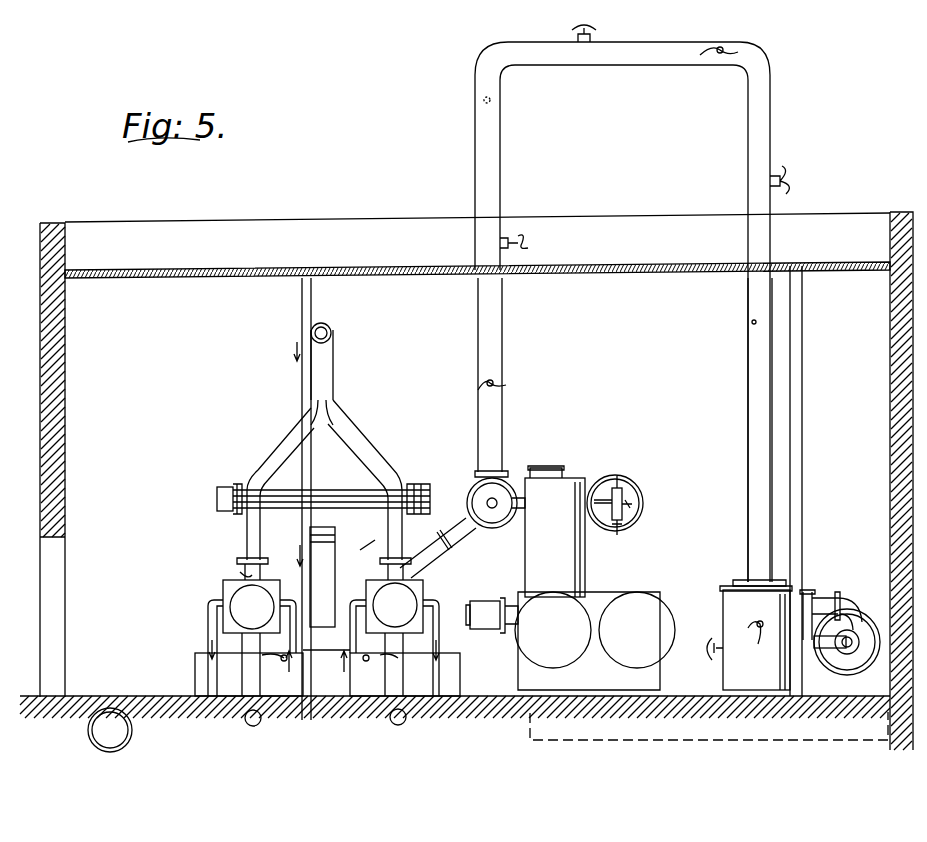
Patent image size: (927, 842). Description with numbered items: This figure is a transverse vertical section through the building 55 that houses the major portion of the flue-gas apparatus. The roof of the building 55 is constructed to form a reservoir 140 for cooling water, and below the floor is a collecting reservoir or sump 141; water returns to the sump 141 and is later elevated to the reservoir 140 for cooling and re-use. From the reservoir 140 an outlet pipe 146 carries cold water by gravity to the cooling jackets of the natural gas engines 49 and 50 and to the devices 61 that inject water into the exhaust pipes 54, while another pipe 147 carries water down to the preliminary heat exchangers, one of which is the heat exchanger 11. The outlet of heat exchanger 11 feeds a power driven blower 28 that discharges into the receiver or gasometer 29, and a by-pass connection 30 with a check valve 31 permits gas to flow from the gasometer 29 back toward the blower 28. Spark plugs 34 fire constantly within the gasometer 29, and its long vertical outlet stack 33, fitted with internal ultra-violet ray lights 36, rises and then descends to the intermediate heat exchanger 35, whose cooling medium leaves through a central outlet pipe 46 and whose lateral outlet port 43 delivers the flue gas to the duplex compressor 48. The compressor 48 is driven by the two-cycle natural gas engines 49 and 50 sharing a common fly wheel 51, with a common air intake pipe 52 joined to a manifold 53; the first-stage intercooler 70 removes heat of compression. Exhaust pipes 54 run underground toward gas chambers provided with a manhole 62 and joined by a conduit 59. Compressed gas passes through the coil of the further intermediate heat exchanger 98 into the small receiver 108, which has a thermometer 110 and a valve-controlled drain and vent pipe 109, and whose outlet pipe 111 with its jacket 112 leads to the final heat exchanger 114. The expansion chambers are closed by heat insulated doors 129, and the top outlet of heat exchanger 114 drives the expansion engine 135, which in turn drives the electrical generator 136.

The reservoir 140 is at (258, 245).
The building 55 is at (42, 420).
The outlet stack 33 is at (492, 342).
The ultra-violet ray lights 36 is at (518, 236).
The outlet pipe 146 is at (302, 314).
The air intake pipe 52 is at (333, 333).
The manifold 53 is at (278, 452).
The intercooler 70 is at (333, 492).
The fly wheel 51 is at (330, 552).
The manhole 62 is at (386, 556).
The compressor 48 is at (215, 592).
The internal combustion natural gas engine 50 is at (240, 572).
The water injecting means 61 is at (262, 660).
The internal combustion natural gas engine 49 is at (424, 584).
The lateral outlet port 43 is at (452, 538).
The intermediate heat exchanger 35 is at (482, 498).
The central outlet pipe 46 is at (494, 510).
The electrical generator 136 is at (512, 600).
The final heat exchanger 114 is at (555, 537).
The expansion engine 135 is at (548, 466).
The outlet pipe 111 is at (605, 478).
The small receiver 108 is at (625, 500).
The thermometer 110 is at (617, 478).
The intermediate heat exchanger 98 is at (630, 514).
The jacket 112 is at (597, 520).
The drain and vent pipe 109 is at (622, 530).
The heat insulated door 129 is at (595, 641).
The receiver or gasometer 29 is at (736, 615).
The spark plugs 34 is at (730, 652).
The pipe 147 is at (802, 430).
The check valve 31 is at (808, 590).
The by-pass connection 30 is at (825, 598).
The blower or gas booster 28 is at (862, 610).
The preliminary heat exchanger 11 is at (872, 630).
The exhaust pipe 54 is at (258, 728).
The conduit 59 is at (128, 740).
The collecting reservoir or sump 141 is at (680, 740).